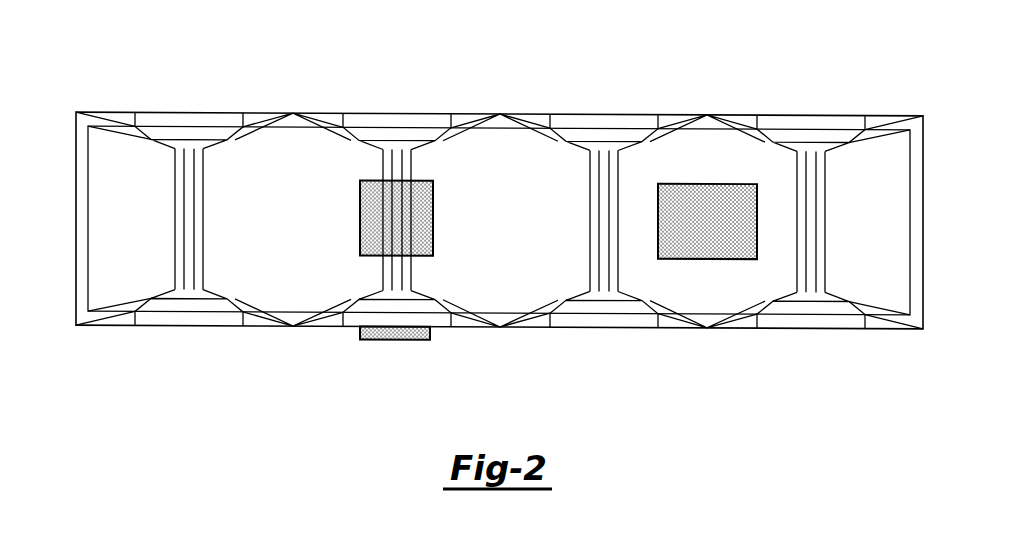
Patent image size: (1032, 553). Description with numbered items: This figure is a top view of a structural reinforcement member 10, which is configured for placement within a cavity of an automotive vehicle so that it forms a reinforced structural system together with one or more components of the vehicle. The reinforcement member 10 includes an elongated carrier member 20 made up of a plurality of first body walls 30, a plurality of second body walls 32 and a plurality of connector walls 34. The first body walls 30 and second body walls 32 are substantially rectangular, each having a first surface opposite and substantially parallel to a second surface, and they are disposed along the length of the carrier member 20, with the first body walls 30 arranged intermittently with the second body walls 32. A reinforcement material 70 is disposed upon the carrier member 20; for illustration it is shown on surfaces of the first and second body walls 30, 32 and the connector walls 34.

The structural reinforcement member 10 is at (714, 36).
The carrier member 20 is at (308, 148).
The first body walls 30 is at (141, 228).
The second body walls 32 is at (294, 228).
The connector walls 34 is at (172, 127).
The reinforcement material 70 is at (380, 340).